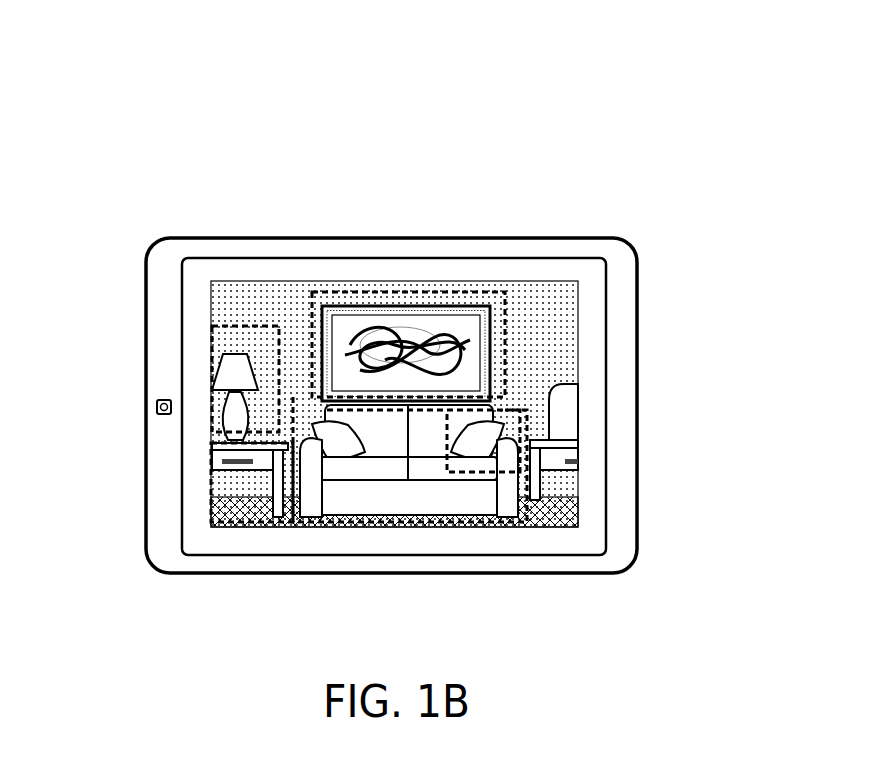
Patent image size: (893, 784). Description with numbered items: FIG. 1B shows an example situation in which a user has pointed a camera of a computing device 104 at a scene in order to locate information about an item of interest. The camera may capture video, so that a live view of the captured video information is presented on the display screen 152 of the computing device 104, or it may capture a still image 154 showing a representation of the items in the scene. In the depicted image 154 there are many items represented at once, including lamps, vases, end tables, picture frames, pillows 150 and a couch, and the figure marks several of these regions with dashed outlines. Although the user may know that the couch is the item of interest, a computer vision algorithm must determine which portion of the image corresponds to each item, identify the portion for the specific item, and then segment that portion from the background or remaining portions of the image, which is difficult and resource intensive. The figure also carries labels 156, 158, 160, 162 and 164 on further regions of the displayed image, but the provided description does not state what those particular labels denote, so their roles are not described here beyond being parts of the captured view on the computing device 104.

The computing device 104 is at (167, 237).
The pillows 150 is at (706, 224).
The display screen 152 is at (320, 292).
The still image 154 is at (212, 326).
The table bounding box 156 is at (210, 487).
The couch bounding box 158 is at (505, 518).
The cushion bounding box 160 is at (520, 472).
The captured image of scene 162 is at (580, 368).
The background region 164 is at (547, 302).